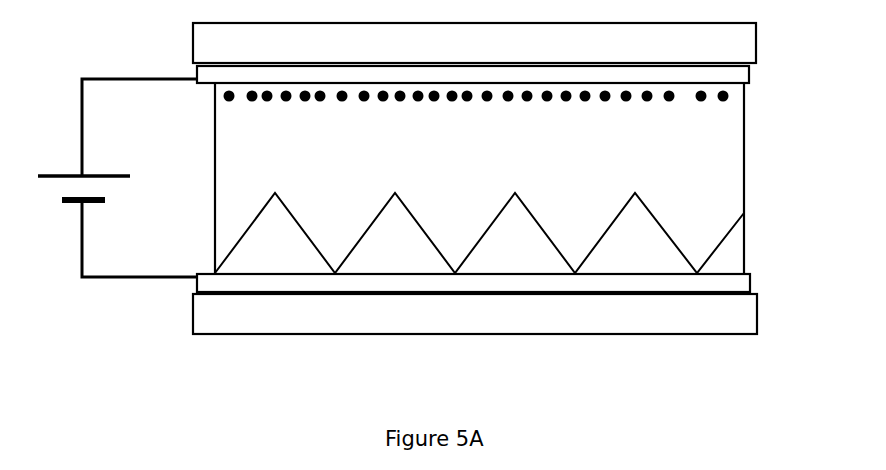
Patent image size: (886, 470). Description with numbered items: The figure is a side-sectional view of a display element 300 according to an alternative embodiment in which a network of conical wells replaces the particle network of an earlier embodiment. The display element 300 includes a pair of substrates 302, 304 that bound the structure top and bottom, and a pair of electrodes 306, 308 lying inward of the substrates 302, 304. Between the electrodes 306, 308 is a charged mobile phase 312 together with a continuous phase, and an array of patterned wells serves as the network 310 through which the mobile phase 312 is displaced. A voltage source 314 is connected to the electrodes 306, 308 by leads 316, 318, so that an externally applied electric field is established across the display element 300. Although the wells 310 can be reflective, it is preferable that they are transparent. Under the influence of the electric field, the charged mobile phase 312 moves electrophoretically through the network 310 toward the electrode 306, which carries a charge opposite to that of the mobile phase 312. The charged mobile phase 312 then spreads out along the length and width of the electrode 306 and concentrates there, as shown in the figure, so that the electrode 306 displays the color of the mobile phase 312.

The display element 300 is at (447, 352).
The substrate 302 is at (757, 43).
The substrate 304 is at (757, 320).
The electrode 306 is at (750, 73).
The electrode 308 is at (752, 287).
The network of patterned wells 310 is at (523, 200).
The mobile phase 312 is at (480, 101).
The voltage source 314 is at (60, 172).
The lead 316 is at (138, 76).
The lead 318 is at (145, 280).